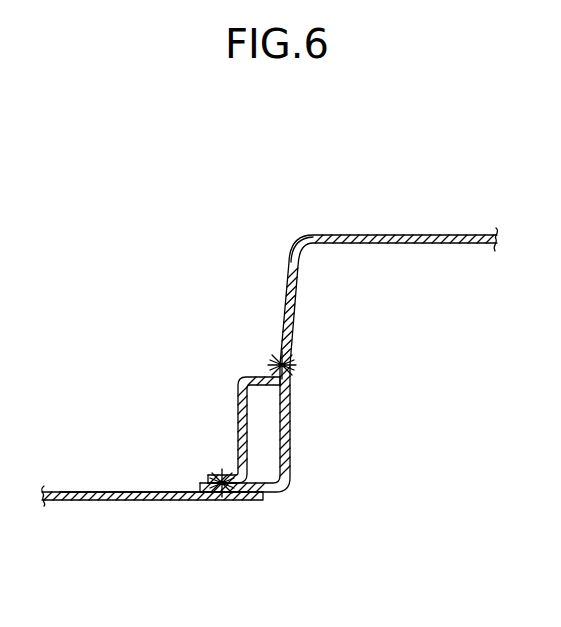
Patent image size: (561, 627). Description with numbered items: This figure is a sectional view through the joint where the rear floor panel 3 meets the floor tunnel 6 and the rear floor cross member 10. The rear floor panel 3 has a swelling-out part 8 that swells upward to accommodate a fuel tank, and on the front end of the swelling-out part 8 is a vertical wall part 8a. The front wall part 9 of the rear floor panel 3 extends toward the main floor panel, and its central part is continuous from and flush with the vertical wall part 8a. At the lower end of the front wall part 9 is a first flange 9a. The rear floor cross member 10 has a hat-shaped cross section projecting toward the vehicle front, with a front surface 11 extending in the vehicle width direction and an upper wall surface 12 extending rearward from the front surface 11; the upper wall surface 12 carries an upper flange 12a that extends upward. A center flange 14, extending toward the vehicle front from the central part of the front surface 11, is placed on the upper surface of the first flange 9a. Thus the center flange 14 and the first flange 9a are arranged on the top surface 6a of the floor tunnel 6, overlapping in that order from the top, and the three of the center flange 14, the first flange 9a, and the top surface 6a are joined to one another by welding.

The rear floor panel 3 is at (298, 230).
The swelling-out part 8 is at (430, 235).
The vertical wall part 8a is at (287, 275).
The front wall part 9 is at (291, 430).
The first flange 9a is at (237, 500).
The floor tunnel 6 is at (86, 503).
The top surface 6a is at (120, 492).
The rear floor cross member 10 is at (232, 376).
The front surface 11 is at (238, 408).
The upper wall surface 12 is at (245, 377).
The upper flange 12a is at (280, 365).
The center flange 14 is at (224, 482).